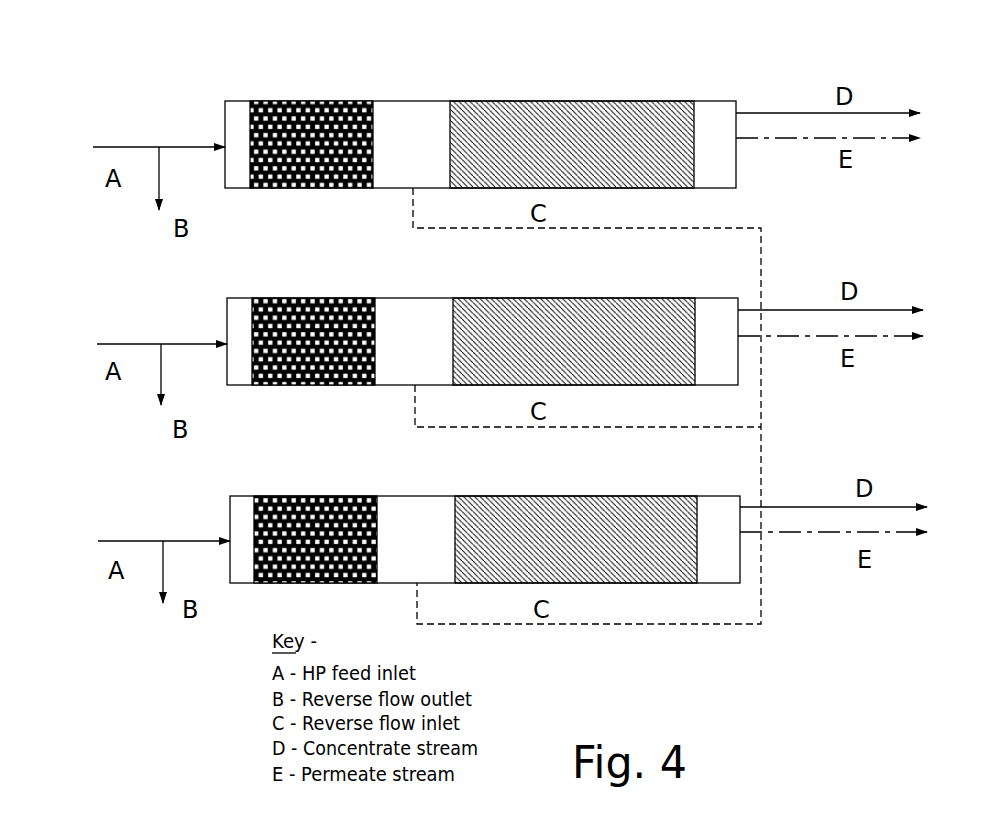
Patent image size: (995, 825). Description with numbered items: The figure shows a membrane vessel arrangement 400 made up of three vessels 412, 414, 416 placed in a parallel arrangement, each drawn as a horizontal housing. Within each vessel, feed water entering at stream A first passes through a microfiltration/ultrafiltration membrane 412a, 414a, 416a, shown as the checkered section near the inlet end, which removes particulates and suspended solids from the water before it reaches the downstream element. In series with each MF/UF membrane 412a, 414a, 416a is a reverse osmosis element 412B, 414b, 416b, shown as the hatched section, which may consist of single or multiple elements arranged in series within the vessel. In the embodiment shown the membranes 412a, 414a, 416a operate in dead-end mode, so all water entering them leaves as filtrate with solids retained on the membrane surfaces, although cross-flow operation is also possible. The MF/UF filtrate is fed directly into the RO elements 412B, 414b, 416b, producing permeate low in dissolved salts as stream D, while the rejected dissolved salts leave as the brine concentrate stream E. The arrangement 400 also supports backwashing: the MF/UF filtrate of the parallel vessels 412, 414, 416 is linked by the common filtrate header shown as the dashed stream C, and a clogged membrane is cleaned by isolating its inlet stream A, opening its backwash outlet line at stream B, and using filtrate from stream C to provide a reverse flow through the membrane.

The membrane vessel arrangement 400 is at (613, 50).
The vessel 412 is at (502, 98).
The MF/UF membrane 412a is at (317, 112).
The reverse osmosis element 412B is at (628, 112).
The vessel 414 is at (503, 296).
The MF/UF membrane 414a is at (333, 308).
The reverse osmosis element 414b is at (623, 316).
The vessel 416 is at (503, 495).
The MF/UF membrane 416a is at (342, 507).
The reverse osmosis element 416b is at (622, 507).